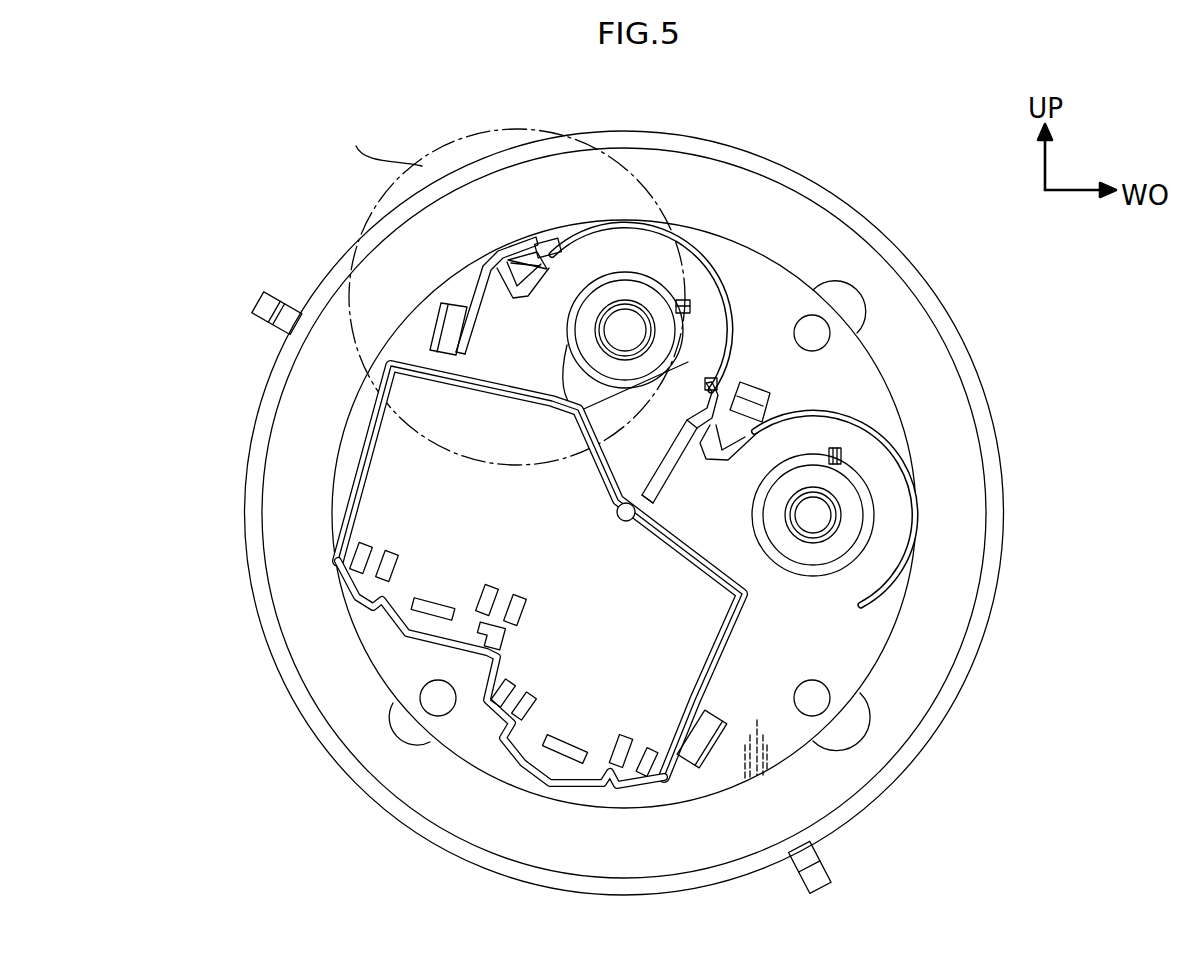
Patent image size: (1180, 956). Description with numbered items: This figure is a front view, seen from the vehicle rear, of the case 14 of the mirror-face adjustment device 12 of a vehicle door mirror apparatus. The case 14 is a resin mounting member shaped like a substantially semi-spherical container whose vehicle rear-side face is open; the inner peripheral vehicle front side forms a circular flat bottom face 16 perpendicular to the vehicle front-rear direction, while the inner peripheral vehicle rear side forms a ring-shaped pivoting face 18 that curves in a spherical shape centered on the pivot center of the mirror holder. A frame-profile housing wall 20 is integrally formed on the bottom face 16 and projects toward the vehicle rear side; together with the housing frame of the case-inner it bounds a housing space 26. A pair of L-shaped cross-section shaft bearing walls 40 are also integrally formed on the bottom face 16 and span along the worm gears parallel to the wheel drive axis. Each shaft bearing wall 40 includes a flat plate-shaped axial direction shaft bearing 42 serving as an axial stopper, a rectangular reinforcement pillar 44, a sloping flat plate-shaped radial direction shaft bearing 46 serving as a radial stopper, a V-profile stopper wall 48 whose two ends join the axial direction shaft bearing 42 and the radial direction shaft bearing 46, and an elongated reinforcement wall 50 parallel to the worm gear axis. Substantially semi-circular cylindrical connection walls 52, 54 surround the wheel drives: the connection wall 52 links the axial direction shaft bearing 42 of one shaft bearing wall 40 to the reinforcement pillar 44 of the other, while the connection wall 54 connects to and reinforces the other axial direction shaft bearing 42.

The mirror-face adjustment device 12 is at (280, 186).
The case 14 is at (858, 210).
The bottom face 16 is at (780, 747).
The pivoting face 18 is at (890, 284).
The housing wall 20 is at (745, 636).
The housing space 26 is at (682, 679).
The shaft bearing walls 40 is at (482, 330).
The axial direction shaft bearings 42 is at (533, 247).
The reinforcement pillars 44 is at (556, 240).
The radial direction shaft bearings 46 is at (494, 262).
The stopper walls 48 is at (521, 299).
The reinforcement walls 50 is at (470, 290).
The connection wall 52 is at (700, 252).
The connection wall 54 is at (878, 442).